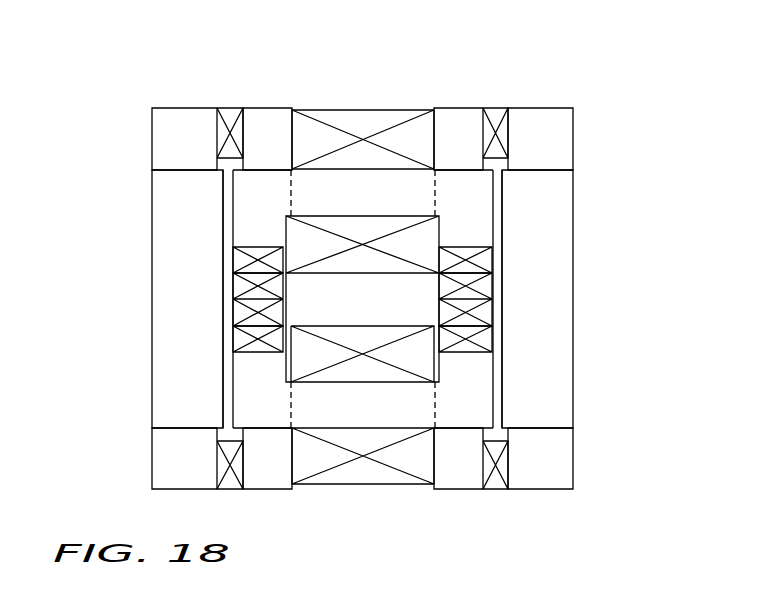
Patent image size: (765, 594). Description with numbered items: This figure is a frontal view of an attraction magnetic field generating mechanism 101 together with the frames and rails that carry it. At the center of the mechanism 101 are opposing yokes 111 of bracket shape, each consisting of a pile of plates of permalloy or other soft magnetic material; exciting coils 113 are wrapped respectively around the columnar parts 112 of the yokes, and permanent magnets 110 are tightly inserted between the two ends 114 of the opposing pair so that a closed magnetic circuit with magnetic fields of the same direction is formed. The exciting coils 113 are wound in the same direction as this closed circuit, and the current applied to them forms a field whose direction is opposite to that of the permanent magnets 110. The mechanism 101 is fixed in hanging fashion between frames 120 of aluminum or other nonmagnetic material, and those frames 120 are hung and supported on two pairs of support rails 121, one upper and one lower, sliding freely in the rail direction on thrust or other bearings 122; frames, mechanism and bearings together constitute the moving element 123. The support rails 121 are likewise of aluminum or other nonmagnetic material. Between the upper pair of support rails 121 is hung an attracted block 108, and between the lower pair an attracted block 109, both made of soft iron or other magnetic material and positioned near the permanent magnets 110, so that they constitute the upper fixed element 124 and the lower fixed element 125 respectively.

The attraction magnetic field generating mechanism 101 is at (370, 110).
The attracted block 108 is at (560, 226).
The attracted block 109 is at (155, 224).
The permanent magnet 110 is at (238, 313).
The opposing yoke 111 is at (459, 169).
The columnar part 112 is at (403, 197).
The exciting coil 113 is at (392, 112).
The end of the opposing yoke pair 114 is at (238, 258).
The frame 120 is at (445, 116).
The support rail 121 is at (157, 126).
The bearing 122 is at (497, 132).
The moving element 123 is at (318, 106).
The upper fixed element 124 is at (578, 186).
The lower fixed element 125 is at (147, 180).